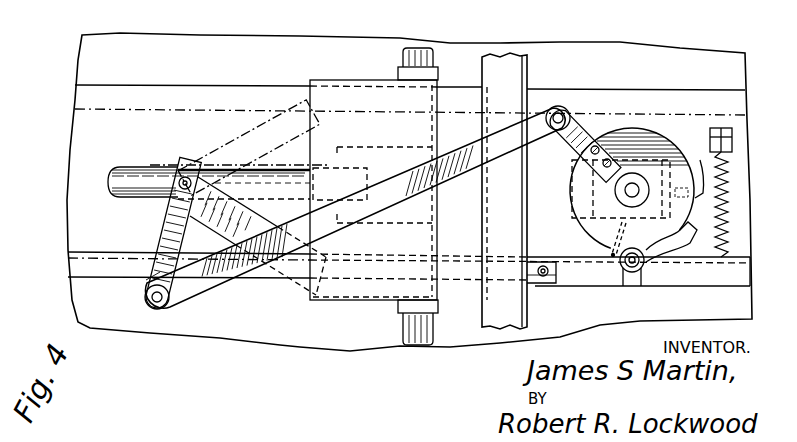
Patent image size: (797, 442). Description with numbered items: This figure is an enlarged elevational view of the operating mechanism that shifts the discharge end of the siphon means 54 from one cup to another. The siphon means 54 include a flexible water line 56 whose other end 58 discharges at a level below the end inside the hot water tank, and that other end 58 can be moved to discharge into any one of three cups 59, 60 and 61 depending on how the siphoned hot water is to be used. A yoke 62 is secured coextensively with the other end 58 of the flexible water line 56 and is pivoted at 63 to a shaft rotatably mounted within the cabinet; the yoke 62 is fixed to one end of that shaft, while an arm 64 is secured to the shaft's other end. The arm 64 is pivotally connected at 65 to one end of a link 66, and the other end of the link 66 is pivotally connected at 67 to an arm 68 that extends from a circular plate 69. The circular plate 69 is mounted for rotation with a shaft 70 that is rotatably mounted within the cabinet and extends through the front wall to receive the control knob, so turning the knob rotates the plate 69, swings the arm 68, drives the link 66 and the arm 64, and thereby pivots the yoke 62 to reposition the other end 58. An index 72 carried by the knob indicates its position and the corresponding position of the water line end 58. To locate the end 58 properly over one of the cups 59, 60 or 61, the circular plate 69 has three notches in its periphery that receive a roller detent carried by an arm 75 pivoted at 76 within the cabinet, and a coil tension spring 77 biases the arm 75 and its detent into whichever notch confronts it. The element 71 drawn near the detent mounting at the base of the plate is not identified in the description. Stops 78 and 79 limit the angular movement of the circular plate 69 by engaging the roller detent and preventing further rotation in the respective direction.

The siphon means 54 is at (118, 152).
The flexible water line 56 is at (120, 190).
The other end of the flexible water line 58 is at (293, 267).
The cup 59 is at (360, 302).
The cup 60 is at (355, 208).
The cup 61 is at (352, 80).
The yoke 62 is at (178, 213).
The pivot 63 is at (177, 162).
The arm 64 is at (146, 280).
The pivotal connection 65 is at (158, 309).
The link 66 is at (240, 270).
The pivotal connection 67 is at (557, 106).
The arm 68 is at (578, 123).
The circular plate 69 is at (650, 138).
The shaft 70 is at (625, 190).
The pivot 71 is at (624, 267).
The index 72 is at (672, 236).
The arm 75 is at (566, 275).
The pivot 76 is at (526, 257).
The coil tension spring 77 is at (729, 202).
The stop 78 is at (612, 252).
The stop 79 is at (700, 162).